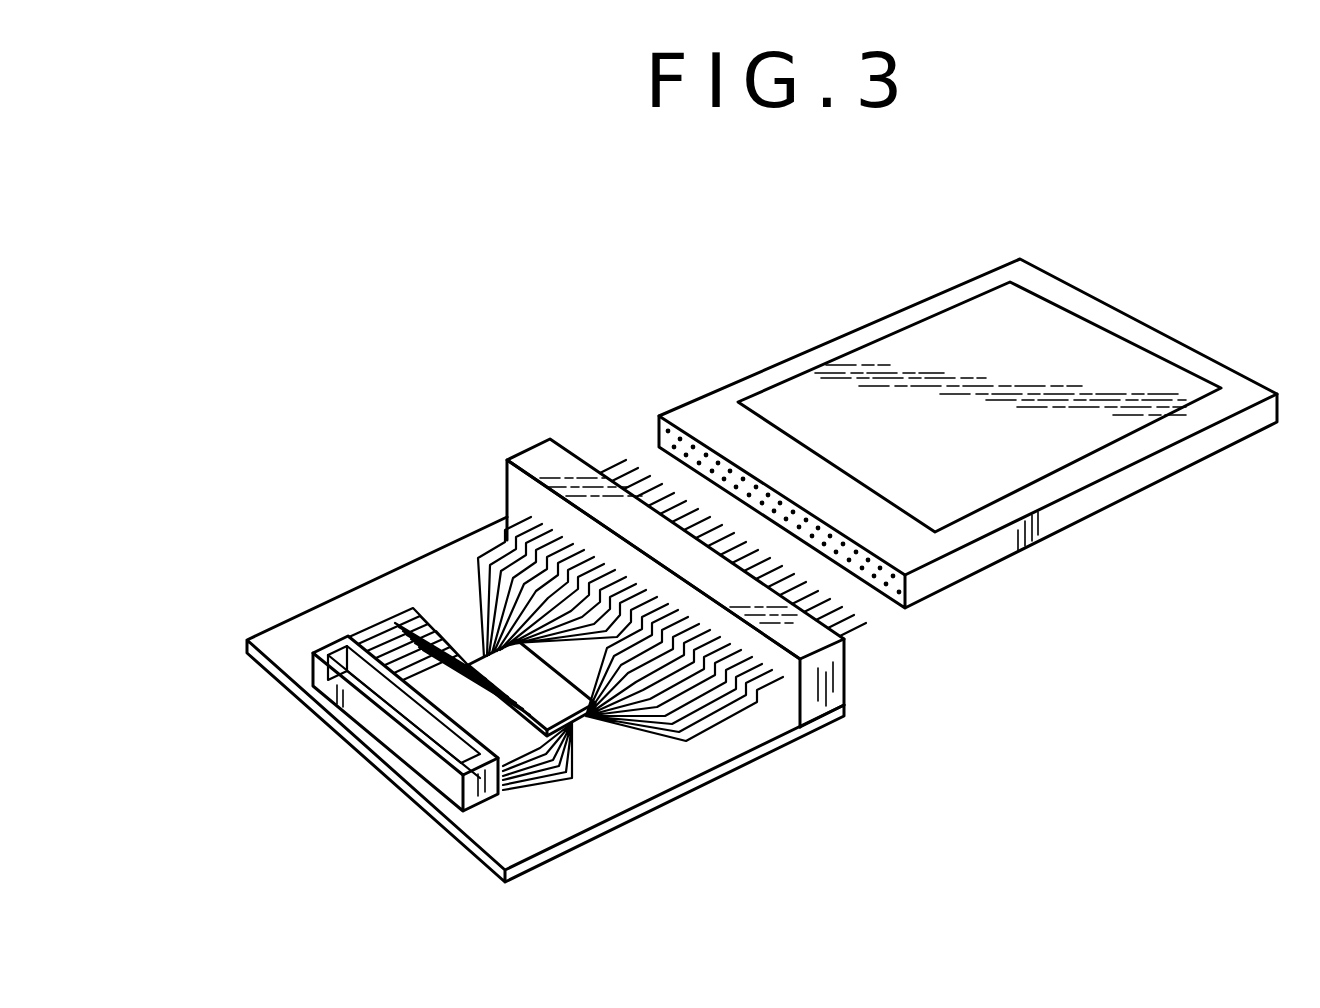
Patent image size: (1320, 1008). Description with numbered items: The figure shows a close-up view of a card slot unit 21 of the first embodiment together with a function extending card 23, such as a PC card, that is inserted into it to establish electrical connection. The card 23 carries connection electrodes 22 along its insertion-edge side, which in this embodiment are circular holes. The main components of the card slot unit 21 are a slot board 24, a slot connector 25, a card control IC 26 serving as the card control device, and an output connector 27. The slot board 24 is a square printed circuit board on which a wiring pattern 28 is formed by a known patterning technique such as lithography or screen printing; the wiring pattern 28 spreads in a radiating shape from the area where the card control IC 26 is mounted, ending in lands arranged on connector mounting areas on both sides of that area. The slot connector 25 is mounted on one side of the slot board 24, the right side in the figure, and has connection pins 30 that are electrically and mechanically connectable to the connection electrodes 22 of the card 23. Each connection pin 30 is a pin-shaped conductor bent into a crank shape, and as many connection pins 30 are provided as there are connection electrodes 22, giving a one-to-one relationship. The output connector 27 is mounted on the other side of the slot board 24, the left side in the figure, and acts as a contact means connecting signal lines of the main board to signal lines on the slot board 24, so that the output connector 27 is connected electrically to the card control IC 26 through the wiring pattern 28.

The card slot unit 21 is at (563, 635).
The connection electrodes 22 is at (883, 591).
The function extending card 23 is at (847, 323).
The slot board 24 is at (445, 832).
The slot connector 25 is at (530, 447).
The card control IC 26 is at (576, 736).
The output connector 27 is at (390, 740).
The wiring pattern 28 is at (418, 603).
The connection pins 30 is at (615, 460).